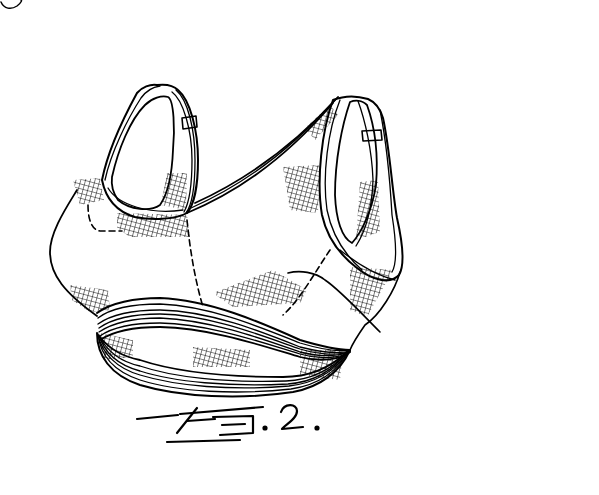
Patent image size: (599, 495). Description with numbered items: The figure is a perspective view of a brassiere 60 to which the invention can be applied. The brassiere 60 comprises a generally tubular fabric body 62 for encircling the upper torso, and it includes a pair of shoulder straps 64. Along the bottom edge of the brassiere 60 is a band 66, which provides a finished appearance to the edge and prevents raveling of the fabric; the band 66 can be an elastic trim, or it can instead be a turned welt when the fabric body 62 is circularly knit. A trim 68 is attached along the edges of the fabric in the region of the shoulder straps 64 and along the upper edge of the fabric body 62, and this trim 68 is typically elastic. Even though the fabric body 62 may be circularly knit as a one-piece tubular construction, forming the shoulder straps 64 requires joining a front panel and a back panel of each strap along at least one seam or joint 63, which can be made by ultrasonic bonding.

The brassiere 60 is at (289, 48).
The fabric body 62 is at (350, 350).
The seam or joint 63 is at (192, 122).
The shoulder straps 64 is at (128, 143).
The band 66 is at (142, 366).
The trim 68 is at (190, 166).